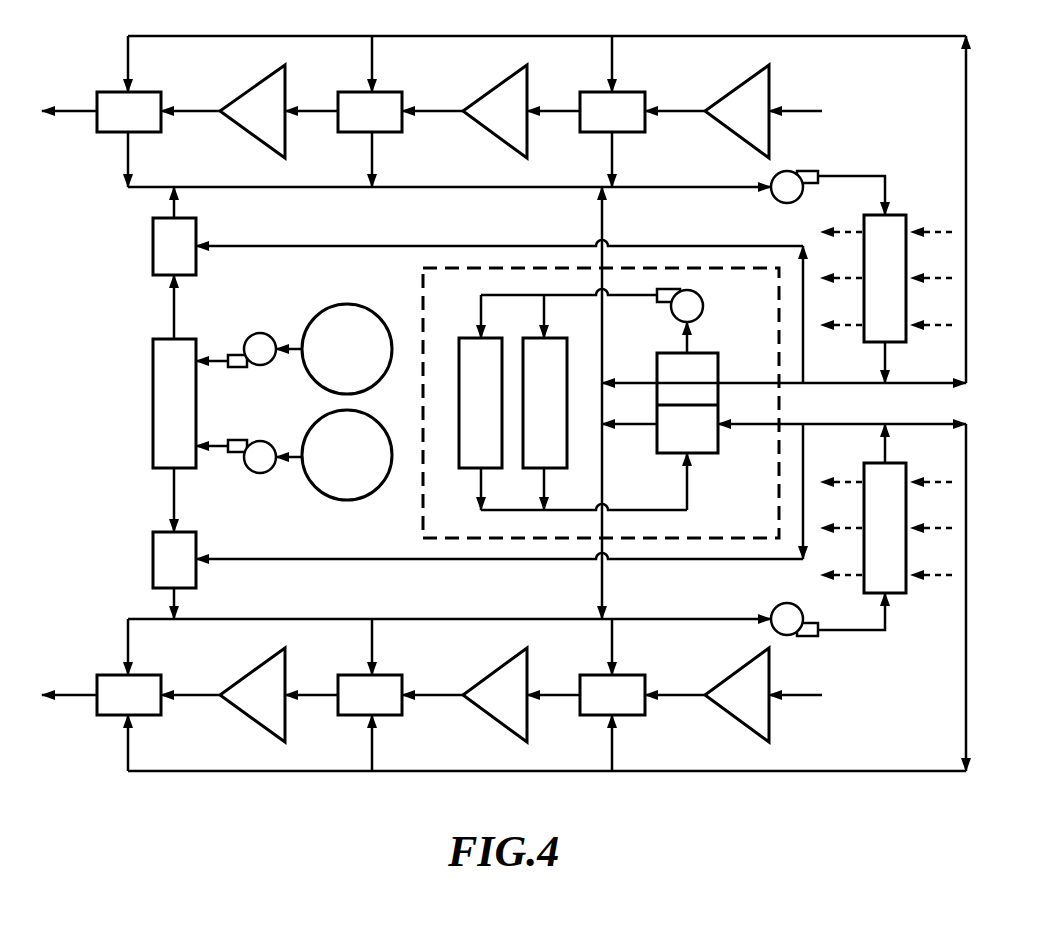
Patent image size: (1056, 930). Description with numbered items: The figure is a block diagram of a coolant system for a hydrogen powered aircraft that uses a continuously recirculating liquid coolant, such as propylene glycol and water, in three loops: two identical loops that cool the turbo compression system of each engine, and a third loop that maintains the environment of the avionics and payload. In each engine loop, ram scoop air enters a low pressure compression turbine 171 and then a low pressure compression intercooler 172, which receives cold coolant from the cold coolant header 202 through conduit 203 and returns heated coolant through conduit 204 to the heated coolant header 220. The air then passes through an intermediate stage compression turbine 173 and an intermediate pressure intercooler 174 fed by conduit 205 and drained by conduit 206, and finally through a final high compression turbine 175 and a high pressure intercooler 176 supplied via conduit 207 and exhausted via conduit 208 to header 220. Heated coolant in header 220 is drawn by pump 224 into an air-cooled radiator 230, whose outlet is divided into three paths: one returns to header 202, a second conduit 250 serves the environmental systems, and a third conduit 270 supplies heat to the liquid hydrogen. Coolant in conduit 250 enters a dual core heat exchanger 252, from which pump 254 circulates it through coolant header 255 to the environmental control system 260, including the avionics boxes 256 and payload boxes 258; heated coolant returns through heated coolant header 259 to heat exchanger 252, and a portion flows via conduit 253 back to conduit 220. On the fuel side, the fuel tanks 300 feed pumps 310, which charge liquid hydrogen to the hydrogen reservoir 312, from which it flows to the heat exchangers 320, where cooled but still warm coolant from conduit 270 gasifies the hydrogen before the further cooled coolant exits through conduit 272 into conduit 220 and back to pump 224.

The low pressure compression turbine 171 is at (731, 124).
The low pressure compression intercooler 172 is at (598, 124).
The intermediate stage compression turbine 173 is at (488, 124).
The intermediate pressure intercooler 174 is at (356, 124).
The final high compression turbine 175 is at (246, 124).
The high pressure intercooler 176 is at (115, 124).
The cold coolant header 202 is at (688, 36).
The conduit 203 is at (613, 64).
The conduit 204 is at (613, 156).
The conduit 205 is at (373, 64).
The conduit 206 is at (373, 156).
The conduit 207 is at (129, 64).
The conduit 208 is at (129, 156).
The heated coolant header 220 is at (428, 189).
The pump 224 is at (806, 171).
The radiator 230 is at (871, 291).
The conduit 250 is at (864, 384).
The dual core heat exchanger 252 is at (673, 393).
The conduit 253 is at (602, 356).
The pump 254 is at (704, 303).
The coolant header 255 is at (637, 296).
The avionics boxes 256 is at (467, 413).
The payload boxes 258 is at (531, 413).
The heated coolant header 259 is at (687, 497).
The environmental control system 260 is at (420, 290).
The conduit 270 is at (528, 214).
The conduit 272 is at (172, 203).
The fuel tanks 300 is at (333, 362).
The pumps 310 is at (262, 366).
The hydrogen reservoir 312 is at (160, 408).
The heat exchangers 320 is at (160, 259).